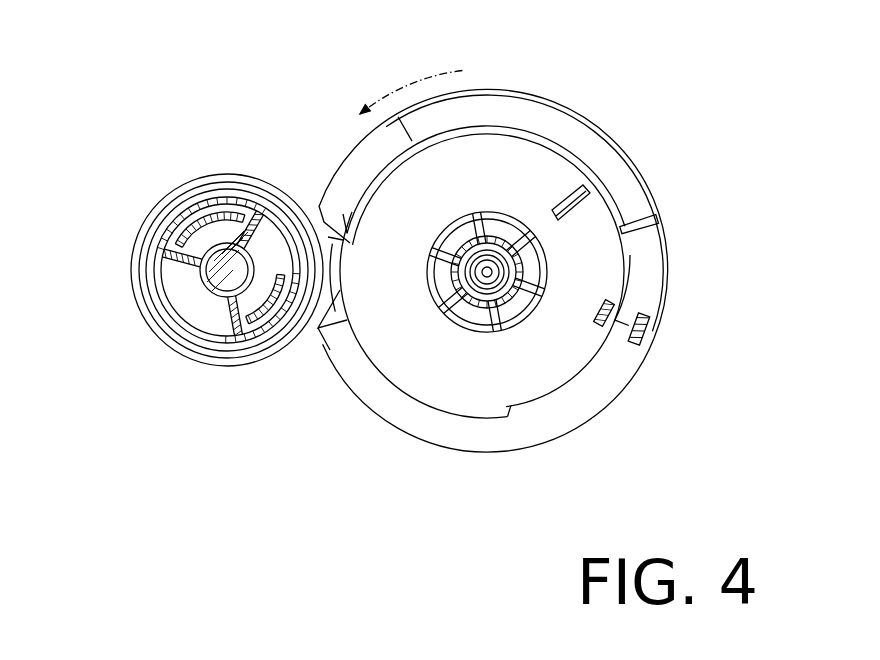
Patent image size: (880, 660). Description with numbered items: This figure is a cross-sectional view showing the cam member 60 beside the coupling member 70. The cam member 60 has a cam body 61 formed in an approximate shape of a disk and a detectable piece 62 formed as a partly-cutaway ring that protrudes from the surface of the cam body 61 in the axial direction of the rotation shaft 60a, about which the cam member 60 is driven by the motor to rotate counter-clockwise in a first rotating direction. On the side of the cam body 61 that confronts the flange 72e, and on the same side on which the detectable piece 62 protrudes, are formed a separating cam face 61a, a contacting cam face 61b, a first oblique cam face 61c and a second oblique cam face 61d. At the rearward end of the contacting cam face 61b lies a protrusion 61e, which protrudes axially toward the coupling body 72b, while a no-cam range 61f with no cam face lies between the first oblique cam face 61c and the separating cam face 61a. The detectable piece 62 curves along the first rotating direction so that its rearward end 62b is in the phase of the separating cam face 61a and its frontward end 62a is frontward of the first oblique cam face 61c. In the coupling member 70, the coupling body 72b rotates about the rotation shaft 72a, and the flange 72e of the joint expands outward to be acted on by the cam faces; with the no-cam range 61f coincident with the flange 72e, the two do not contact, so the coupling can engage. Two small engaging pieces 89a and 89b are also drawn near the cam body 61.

The cam member 60 is at (543, 470).
The rotation shaft 60a is at (470, 300).
The cam body 61 is at (595, 118).
The separating cam face 61a is at (412, 430).
The contacting cam face 61b is at (504, 100).
The first oblique cam face 61c is at (358, 158).
The second oblique cam face 61d is at (660, 284).
The protrusion 61e is at (660, 228).
The no-cam range 61f is at (330, 330).
The detectable piece 62 is at (575, 385).
The frontward end 62a is at (338, 197).
The rearward end 62b is at (503, 420).
The coupling member 70 is at (215, 385).
The rotation shaft 72a is at (225, 272).
The coupling body 72b is at (182, 330).
The flange 72e is at (222, 172).
The engaging piece 89a is at (607, 324).
The engaging piece 89b is at (652, 337).